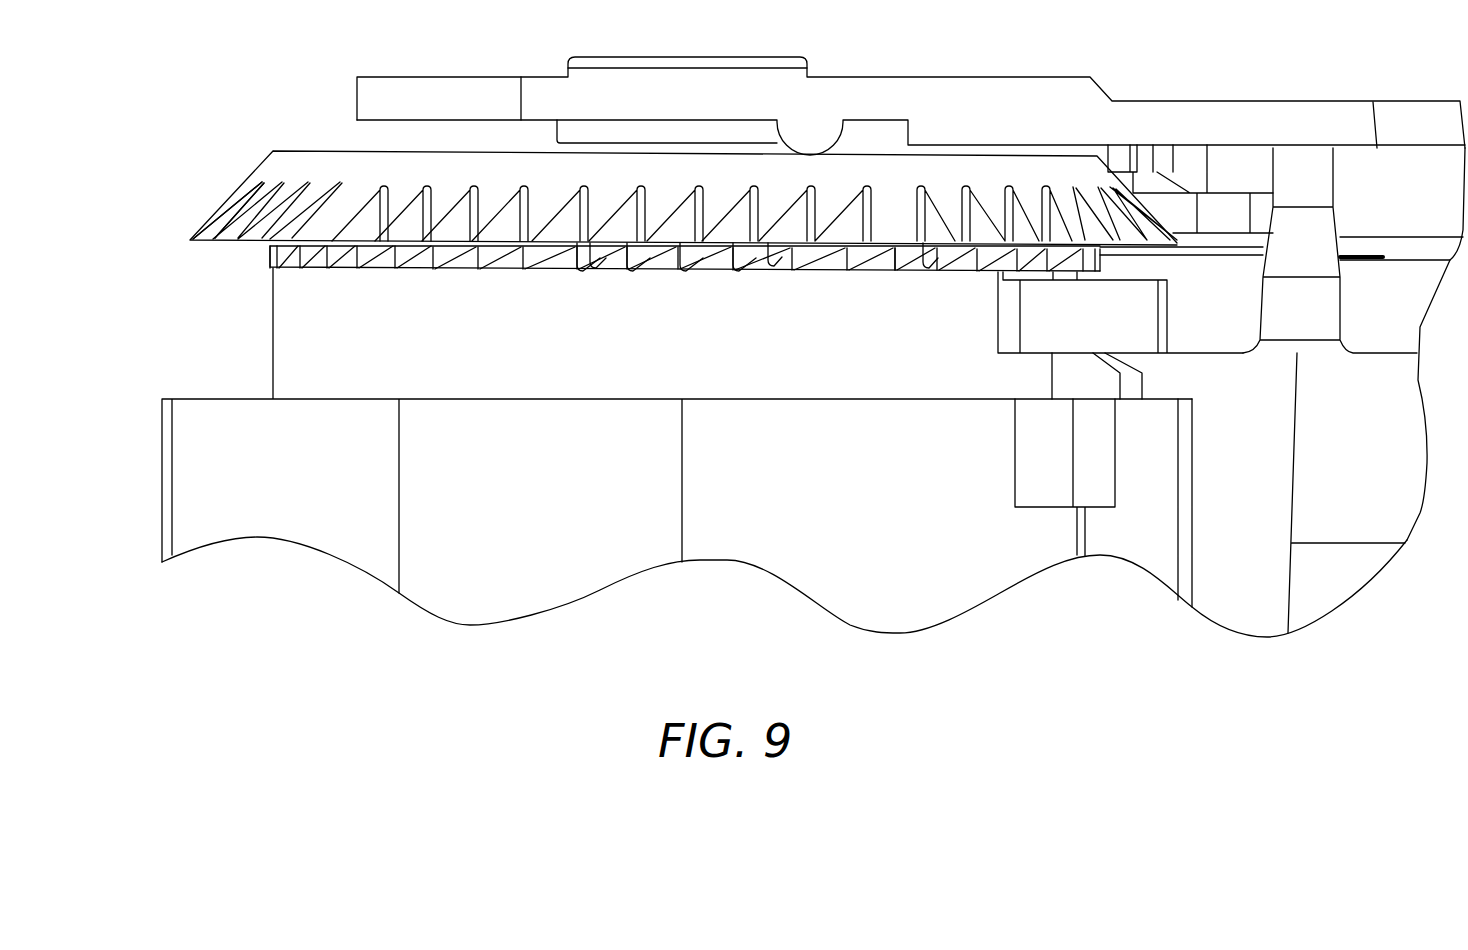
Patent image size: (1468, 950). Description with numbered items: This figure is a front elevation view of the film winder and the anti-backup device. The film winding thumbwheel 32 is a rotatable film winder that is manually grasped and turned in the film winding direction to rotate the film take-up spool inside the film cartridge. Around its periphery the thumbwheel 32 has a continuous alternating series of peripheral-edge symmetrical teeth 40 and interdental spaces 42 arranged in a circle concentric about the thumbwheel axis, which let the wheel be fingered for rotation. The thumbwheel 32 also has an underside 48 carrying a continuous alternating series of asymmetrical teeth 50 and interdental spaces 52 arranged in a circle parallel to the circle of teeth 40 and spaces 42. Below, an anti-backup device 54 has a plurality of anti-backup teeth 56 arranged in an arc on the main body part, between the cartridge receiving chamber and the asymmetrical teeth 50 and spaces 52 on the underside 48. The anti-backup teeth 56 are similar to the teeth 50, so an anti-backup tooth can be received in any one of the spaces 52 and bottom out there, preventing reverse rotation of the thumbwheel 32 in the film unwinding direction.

The film winding thumbwheel 32 is at (260, 157).
The peripheral-edge symmetrical teeth 40 is at (385, 212).
The interdental spaces 42 is at (443, 233).
The underside 48 is at (232, 246).
The asymmetrical teeth 50 is at (600, 247).
The interdental spaces 52 is at (590, 250).
The anti-backup device 54 is at (566, 300).
The anti-backup teeth 56 is at (760, 262).